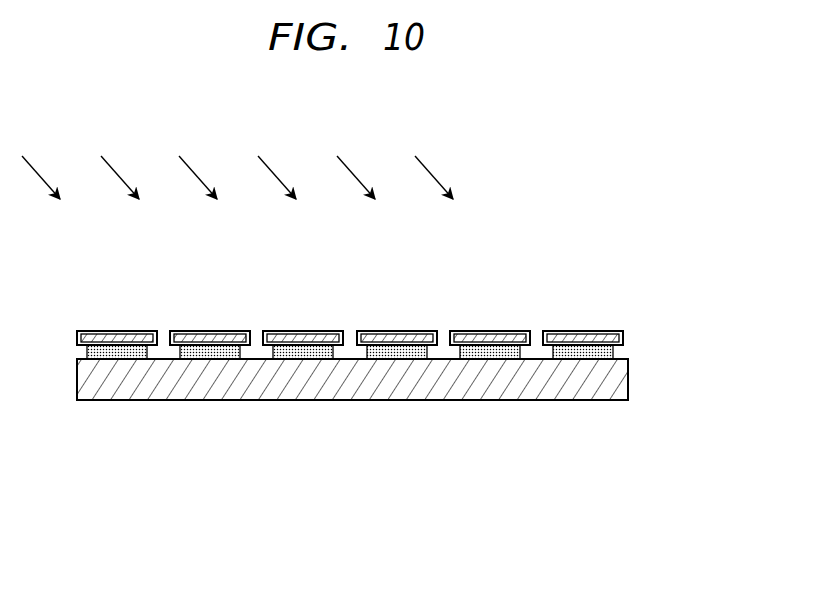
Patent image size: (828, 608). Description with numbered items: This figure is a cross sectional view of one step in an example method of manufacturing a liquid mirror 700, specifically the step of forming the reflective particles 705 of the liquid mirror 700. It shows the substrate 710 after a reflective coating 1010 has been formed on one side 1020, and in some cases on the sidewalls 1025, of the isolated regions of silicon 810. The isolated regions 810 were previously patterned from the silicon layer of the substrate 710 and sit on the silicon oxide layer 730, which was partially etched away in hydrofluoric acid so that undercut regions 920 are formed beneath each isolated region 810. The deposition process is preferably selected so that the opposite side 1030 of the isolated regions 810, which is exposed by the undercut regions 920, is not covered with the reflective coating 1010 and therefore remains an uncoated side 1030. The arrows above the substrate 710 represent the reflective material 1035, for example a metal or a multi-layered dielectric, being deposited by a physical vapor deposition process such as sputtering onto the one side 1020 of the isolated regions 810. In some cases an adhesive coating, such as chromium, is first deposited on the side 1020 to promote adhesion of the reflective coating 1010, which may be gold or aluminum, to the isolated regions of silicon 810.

The liquid mirror 700 is at (133, 80).
The reflective particles 705 is at (647, 199).
The substrate 710 is at (119, 388).
The silicon oxide layer 730 is at (364, 351).
The isolated regions of silicon 810 is at (395, 306).
The undercut regions 920 is at (621, 366).
The reflective coating 1010 is at (393, 295).
The one side 1020 is at (395, 294).
The sidewalls 1025 is at (622, 337).
The uncoated side 1030 is at (614, 350).
The reflective material 1035 is at (467, 173).